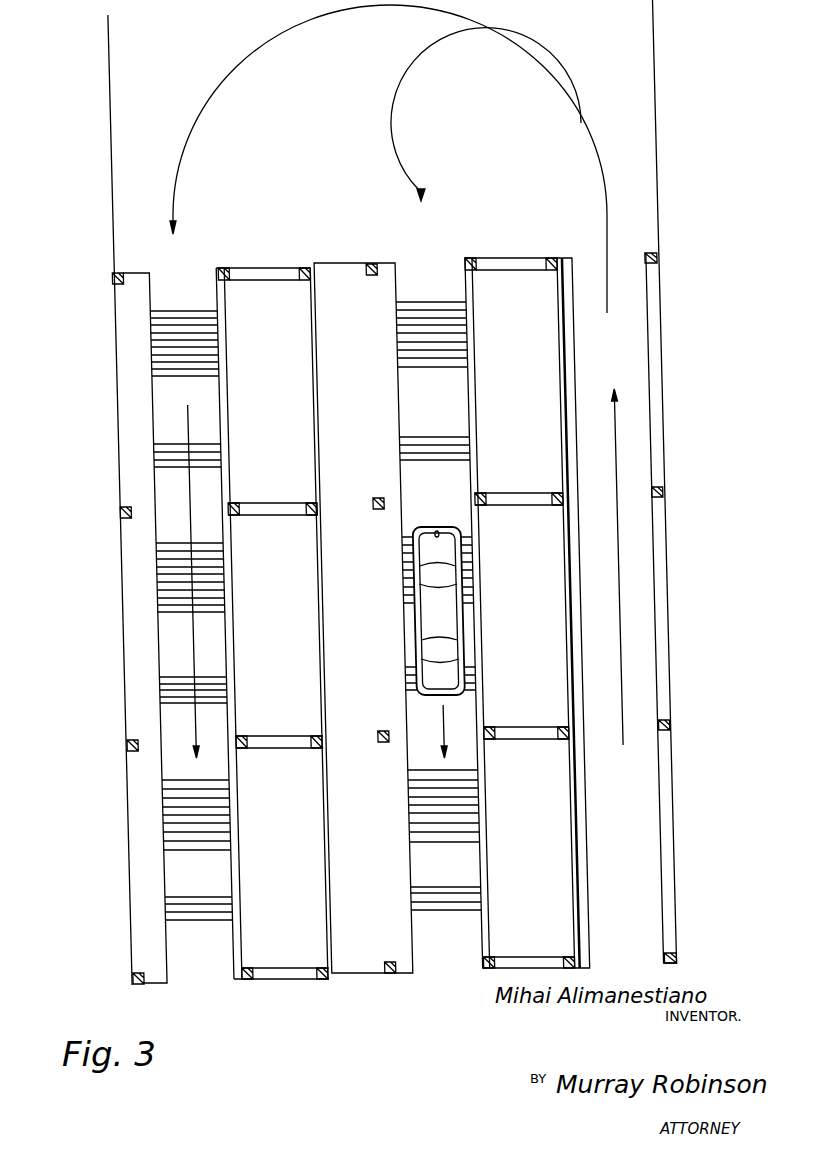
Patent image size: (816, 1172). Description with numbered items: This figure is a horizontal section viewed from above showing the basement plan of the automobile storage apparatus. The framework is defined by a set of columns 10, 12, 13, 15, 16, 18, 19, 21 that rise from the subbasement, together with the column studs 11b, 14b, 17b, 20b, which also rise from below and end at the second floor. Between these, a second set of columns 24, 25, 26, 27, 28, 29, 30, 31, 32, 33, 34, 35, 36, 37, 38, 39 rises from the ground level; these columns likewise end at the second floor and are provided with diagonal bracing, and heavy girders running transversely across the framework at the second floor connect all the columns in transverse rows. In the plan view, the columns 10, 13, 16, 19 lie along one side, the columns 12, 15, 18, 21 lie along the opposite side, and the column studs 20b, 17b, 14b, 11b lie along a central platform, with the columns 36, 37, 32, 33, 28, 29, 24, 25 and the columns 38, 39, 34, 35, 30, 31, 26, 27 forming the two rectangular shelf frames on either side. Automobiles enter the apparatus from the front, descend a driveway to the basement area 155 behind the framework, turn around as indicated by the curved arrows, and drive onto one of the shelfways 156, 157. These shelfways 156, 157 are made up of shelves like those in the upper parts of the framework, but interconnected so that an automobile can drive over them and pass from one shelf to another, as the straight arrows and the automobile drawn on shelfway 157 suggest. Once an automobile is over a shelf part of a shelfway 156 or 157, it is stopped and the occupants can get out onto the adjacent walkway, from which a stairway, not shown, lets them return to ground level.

The column 10 is at (133, 979).
The column 13 is at (128, 746).
The column 16 is at (116, 512).
The column 19 is at (112, 279).
The column 12 is at (678, 960).
The column 15 is at (672, 725).
The column 18 is at (665, 493).
The column 21 is at (660, 258).
The column stud 11b is at (388, 975).
The column stud 14b is at (380, 734).
The column stud 17b is at (372, 500).
The column stud 20b is at (368, 264).
The column 24 is at (248, 967).
The column 25 is at (324, 980).
The column 26 is at (491, 960).
The column 27 is at (568, 960).
The column 28 is at (240, 736).
The column 29 is at (322, 750).
The column 30 is at (489, 728).
The column 31 is at (566, 742).
The column 32 is at (232, 501).
The column 33 is at (312, 516).
The column 34 is at (480, 495).
The column 35 is at (558, 507).
The column 36 is at (229, 281).
The column 37 is at (304, 282).
The column 38 is at (478, 271).
The column 39 is at (550, 272).
The basement area 155 is at (368, 146).
The shelfway 156 is at (195, 284).
The shelfway 157 is at (442, 277).